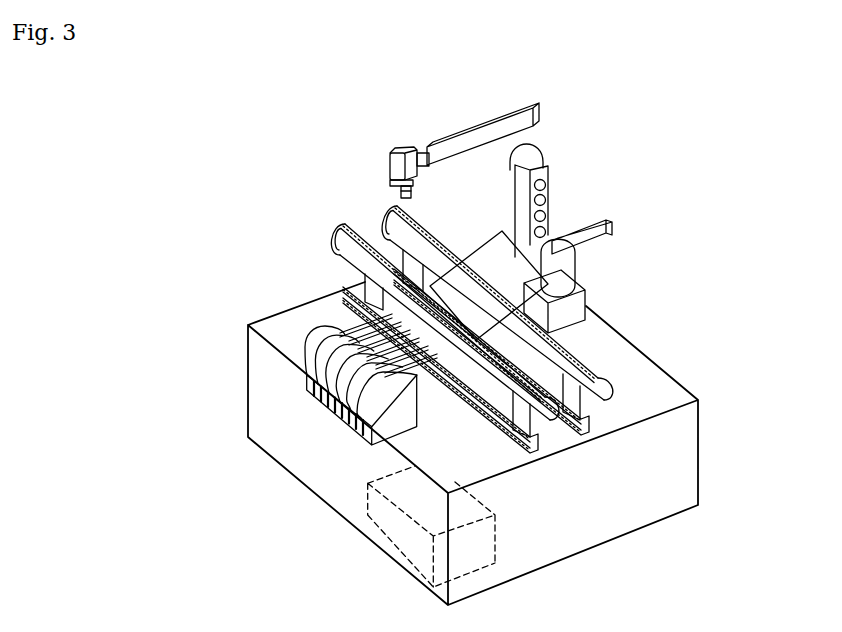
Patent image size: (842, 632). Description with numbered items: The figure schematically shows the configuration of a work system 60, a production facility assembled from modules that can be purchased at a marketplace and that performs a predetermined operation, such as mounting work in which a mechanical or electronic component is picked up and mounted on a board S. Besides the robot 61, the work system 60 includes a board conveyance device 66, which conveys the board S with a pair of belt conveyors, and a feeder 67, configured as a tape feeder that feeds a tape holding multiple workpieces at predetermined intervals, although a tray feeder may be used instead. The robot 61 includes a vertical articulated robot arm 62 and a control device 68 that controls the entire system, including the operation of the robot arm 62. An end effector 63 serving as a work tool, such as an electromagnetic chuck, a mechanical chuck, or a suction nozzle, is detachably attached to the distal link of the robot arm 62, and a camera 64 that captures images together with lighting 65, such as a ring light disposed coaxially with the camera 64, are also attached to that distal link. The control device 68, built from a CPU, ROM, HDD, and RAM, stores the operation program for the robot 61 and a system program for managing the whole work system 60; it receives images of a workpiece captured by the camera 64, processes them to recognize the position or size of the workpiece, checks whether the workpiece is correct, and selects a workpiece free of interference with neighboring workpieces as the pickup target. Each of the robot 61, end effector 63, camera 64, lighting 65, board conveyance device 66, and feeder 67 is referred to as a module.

The work system 60 is at (683, 121).
The robot 61 is at (553, 122).
The vertical articulated robot arm 62 is at (558, 192).
The end effector 63 is at (413, 190).
The camera 64 is at (392, 167).
The lighting 65 is at (392, 181).
The board conveyance device 66 is at (333, 241).
The feeder 67 is at (327, 413).
The control device 68 is at (367, 516).
The board S is at (470, 302).